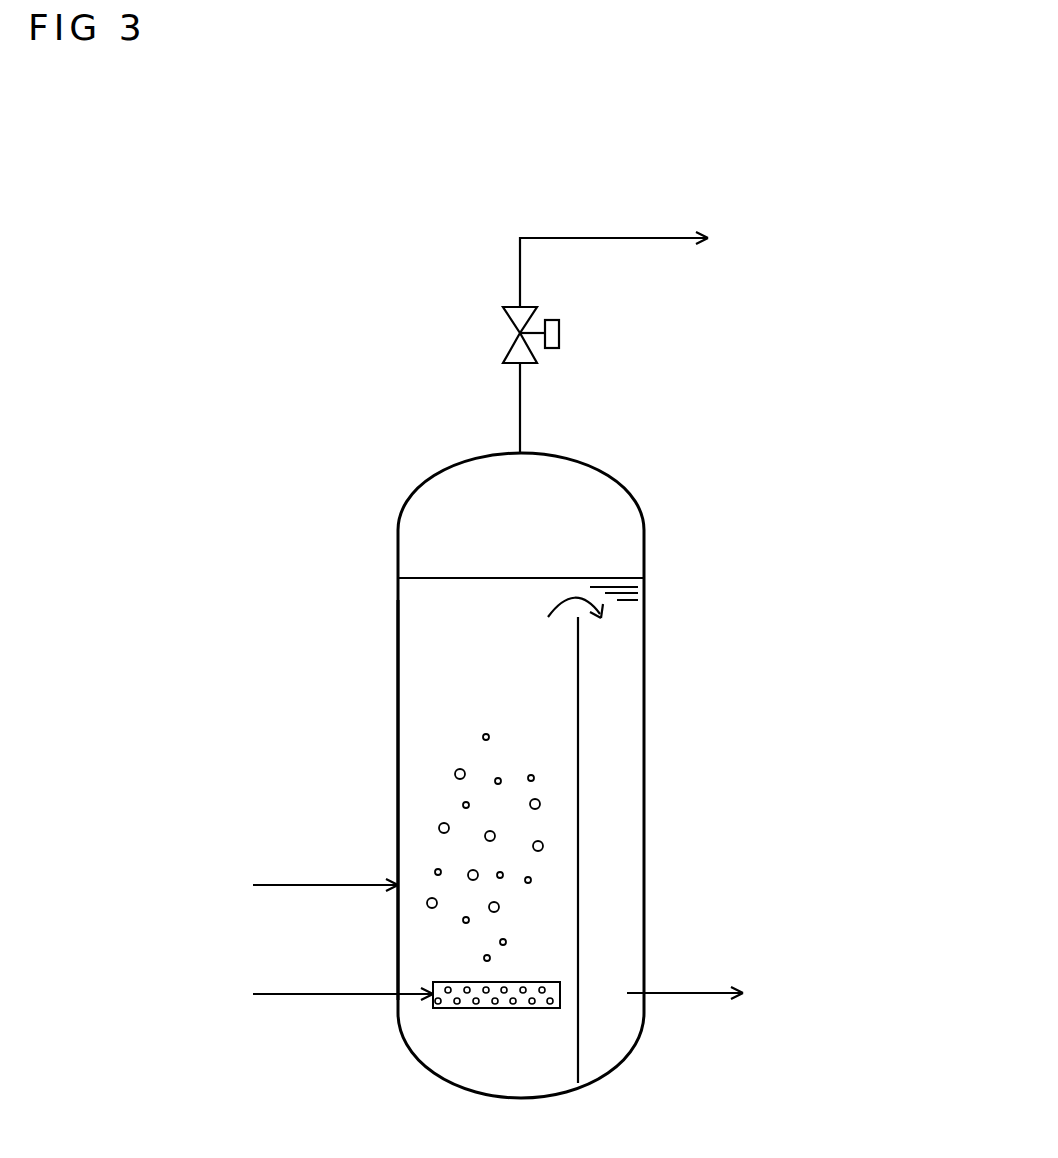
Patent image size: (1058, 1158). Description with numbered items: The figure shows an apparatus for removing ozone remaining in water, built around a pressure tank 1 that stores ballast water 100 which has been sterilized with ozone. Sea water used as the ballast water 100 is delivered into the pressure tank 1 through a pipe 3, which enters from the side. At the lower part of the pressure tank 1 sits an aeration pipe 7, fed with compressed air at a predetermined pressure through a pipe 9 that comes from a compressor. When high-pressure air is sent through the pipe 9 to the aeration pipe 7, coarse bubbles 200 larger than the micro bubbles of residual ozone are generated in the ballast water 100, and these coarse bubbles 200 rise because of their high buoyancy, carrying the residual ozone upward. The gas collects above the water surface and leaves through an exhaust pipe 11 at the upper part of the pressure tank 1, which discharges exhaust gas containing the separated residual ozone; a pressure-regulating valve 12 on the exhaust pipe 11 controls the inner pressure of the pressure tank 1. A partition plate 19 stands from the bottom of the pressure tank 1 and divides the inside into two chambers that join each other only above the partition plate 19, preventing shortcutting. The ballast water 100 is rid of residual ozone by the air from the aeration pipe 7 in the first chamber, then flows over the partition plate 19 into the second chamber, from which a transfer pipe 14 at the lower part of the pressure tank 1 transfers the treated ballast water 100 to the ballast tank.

The pressure tank 1 is at (645, 556).
The pipe 3 is at (312, 885).
The aeration pipe 7 is at (434, 1006).
The pipe 9 is at (312, 996).
The exhaust pipe 11 is at (520, 410).
The pressure-regulating valve 12 is at (515, 337).
The transfer pipe 14 is at (700, 996).
The partition plate 19 is at (578, 730).
The ballast water 100 is at (415, 640).
The coarse bubbles 200 is at (456, 771).